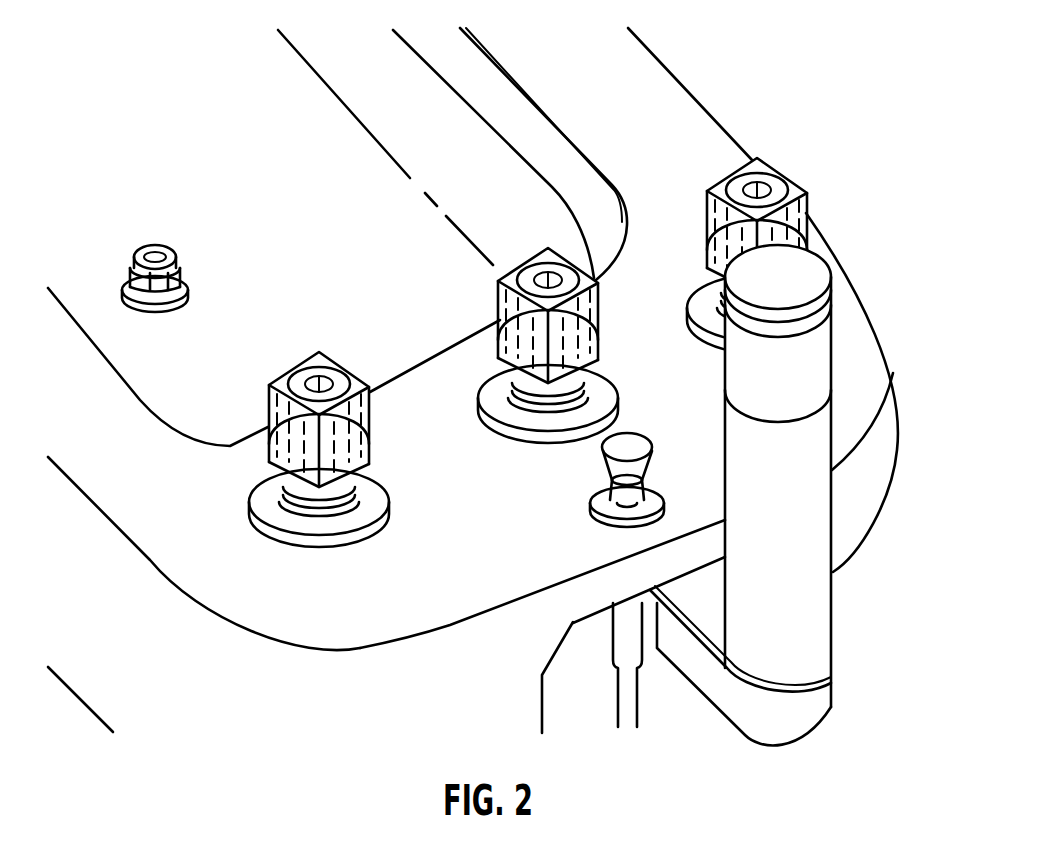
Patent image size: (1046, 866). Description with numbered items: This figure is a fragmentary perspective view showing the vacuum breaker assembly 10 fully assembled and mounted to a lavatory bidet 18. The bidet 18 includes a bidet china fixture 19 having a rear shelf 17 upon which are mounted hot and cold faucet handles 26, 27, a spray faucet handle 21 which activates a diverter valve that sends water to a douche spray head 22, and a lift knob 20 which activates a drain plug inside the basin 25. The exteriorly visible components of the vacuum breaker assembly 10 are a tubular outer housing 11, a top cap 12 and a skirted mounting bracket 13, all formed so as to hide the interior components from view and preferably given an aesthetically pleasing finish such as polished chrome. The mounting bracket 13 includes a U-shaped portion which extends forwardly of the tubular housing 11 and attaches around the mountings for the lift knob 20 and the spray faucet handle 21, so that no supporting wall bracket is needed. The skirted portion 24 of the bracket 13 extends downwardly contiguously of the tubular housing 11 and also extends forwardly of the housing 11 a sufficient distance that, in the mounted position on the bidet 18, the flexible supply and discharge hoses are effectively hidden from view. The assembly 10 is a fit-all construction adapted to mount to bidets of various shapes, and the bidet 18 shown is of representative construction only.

The vacuum breaker assembly 10 is at (843, 593).
The tubular outer housing 11 is at (750, 467).
The top cap 12 is at (807, 273).
The skirted mounting bracket 13 is at (702, 598).
The rear shelf 17 is at (440, 617).
The lavatory bidet 18 is at (675, 125).
The bidet china fixture 19 is at (167, 550).
The lift knob 20 is at (624, 450).
The spray faucet handle 21 is at (581, 313).
The douche spray head 22 is at (180, 270).
The skirted portion 24 is at (683, 657).
The basin 25 is at (387, 193).
The hot faucet handle 26 is at (798, 212).
The cold faucet handle 27 is at (356, 445).